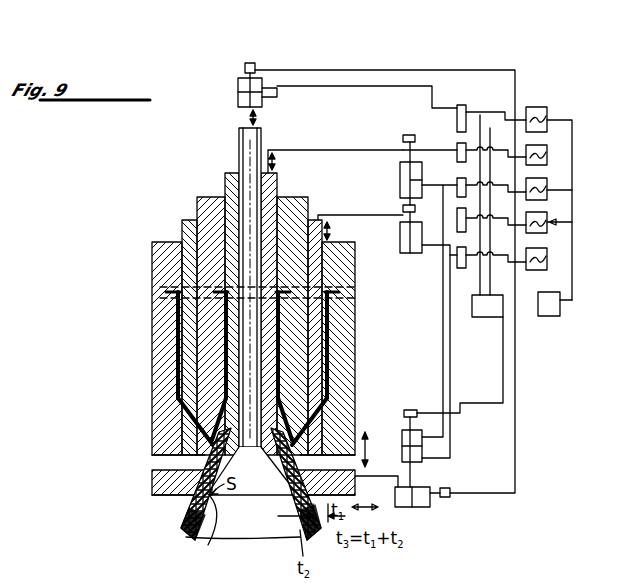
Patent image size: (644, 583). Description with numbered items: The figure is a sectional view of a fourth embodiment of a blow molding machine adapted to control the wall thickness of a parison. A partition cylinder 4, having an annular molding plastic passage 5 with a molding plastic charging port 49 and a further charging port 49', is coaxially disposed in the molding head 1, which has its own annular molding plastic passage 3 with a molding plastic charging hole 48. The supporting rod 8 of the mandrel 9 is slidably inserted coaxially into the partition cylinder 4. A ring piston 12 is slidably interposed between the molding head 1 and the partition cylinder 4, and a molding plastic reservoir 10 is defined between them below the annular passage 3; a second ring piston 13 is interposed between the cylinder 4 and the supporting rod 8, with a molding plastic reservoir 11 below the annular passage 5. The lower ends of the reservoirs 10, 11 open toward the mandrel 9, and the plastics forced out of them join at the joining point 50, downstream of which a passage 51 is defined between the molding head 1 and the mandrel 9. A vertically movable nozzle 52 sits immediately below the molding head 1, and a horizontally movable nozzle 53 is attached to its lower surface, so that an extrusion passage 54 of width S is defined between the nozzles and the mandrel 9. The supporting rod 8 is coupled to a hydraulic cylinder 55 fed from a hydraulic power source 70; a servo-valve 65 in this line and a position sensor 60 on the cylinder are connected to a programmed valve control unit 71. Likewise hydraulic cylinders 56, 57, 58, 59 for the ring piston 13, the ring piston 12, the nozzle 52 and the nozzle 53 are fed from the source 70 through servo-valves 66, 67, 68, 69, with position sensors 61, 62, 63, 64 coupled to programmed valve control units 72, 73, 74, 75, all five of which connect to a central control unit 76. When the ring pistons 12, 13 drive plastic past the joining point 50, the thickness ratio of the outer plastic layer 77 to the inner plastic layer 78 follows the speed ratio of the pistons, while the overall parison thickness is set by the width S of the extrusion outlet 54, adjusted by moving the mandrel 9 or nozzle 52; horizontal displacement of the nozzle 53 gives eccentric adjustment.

The molding head 1 is at (160, 240).
The annular molding plastic passage 3 is at (166, 296).
The partition cylinder 4 is at (212, 196).
The annular molding plastic passage 5 is at (214, 274).
The supporting rod 8 is at (263, 133).
The mandrel 9 is at (276, 496).
The molding plastic reservoir 10 is at (342, 410).
The molding plastic reservoir 11 is at (325, 385).
The ring piston 12 is at (188, 218).
The ring piston 13 is at (232, 172).
The molding plastic charging hole 48 is at (340, 292).
The molding plastic charging port 49 is at (335, 178).
The molding plastic charging port 49' is at (360, 227).
The joining point 50 is at (282, 498).
The passage 51 is at (252, 471).
The vertically movable nozzle 52 is at (152, 476).
The horizontally movable nozzle 53 is at (156, 496).
The extrusion passage 54 is at (216, 540).
The hydraulic cylinder 55 is at (237, 95).
The hydraulic cylinder 56 is at (400, 180).
The hydraulic cylinder 57 is at (400, 250).
The hydraulic cylinder 58 is at (402, 436).
The hydraulic cylinder 59 is at (418, 508).
The position sensor 60 is at (253, 62).
The position sensor 61 is at (403, 138).
The position sensor 62 is at (403, 208).
The position sensor 63 is at (412, 410).
The position sensor 64 is at (450, 492).
The servo-valve 65 is at (458, 105).
The servo-valve 66 is at (457, 150).
The servo-valve 67 is at (447, 200).
The servo-valve 68 is at (455, 250).
The servo-valve 69 is at (466, 270).
The hydraulic power source 70 is at (492, 318).
The programmed valve control unit 71 is at (548, 110).
The programmed valve control unit 72 is at (548, 156).
The programmed valve control unit 73 is at (548, 190).
The programmed valve control unit 74 is at (552, 222).
The programmed valve control unit 75 is at (548, 262).
The central control unit 76 is at (561, 310).
The outer plastic layer 77 is at (176, 524).
The inner plastic layer 78 is at (196, 540).